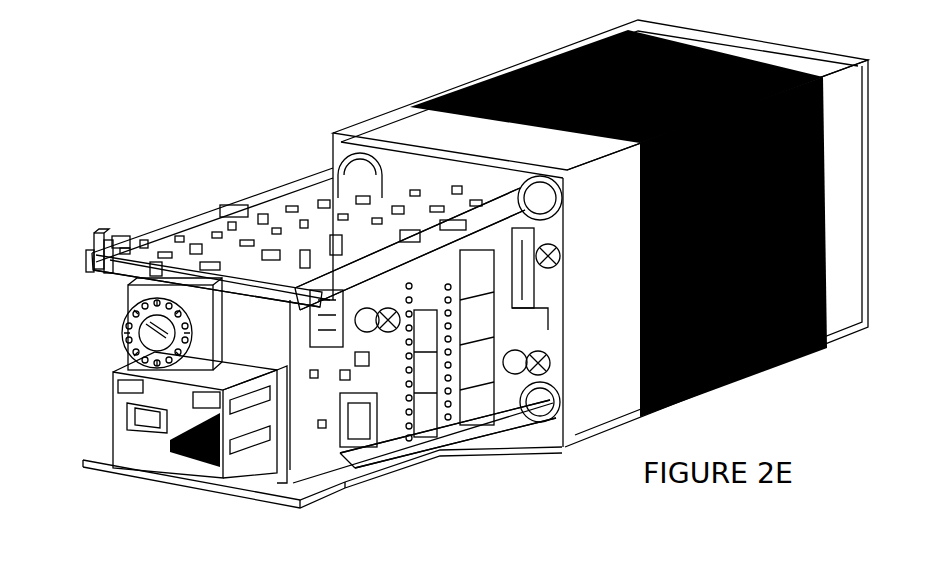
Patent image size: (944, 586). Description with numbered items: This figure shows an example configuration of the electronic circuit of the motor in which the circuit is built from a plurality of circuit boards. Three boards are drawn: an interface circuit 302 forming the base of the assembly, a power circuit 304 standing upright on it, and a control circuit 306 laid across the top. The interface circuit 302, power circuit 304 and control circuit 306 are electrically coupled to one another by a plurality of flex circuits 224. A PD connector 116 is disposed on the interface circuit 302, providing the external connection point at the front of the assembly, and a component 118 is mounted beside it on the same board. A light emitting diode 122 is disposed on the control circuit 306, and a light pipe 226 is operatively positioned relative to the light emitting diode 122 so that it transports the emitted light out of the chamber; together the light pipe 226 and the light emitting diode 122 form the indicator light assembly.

The PD connector 116 is at (137, 433).
The rotary switch 118 is at (125, 330).
The light emitting diode 122 is at (120, 257).
The flex circuits 224 is at (390, 240).
The light pipe 226 is at (93, 250).
The interface circuit 302 is at (287, 502).
The power circuit 304 is at (305, 452).
The control circuit 306 is at (273, 190).